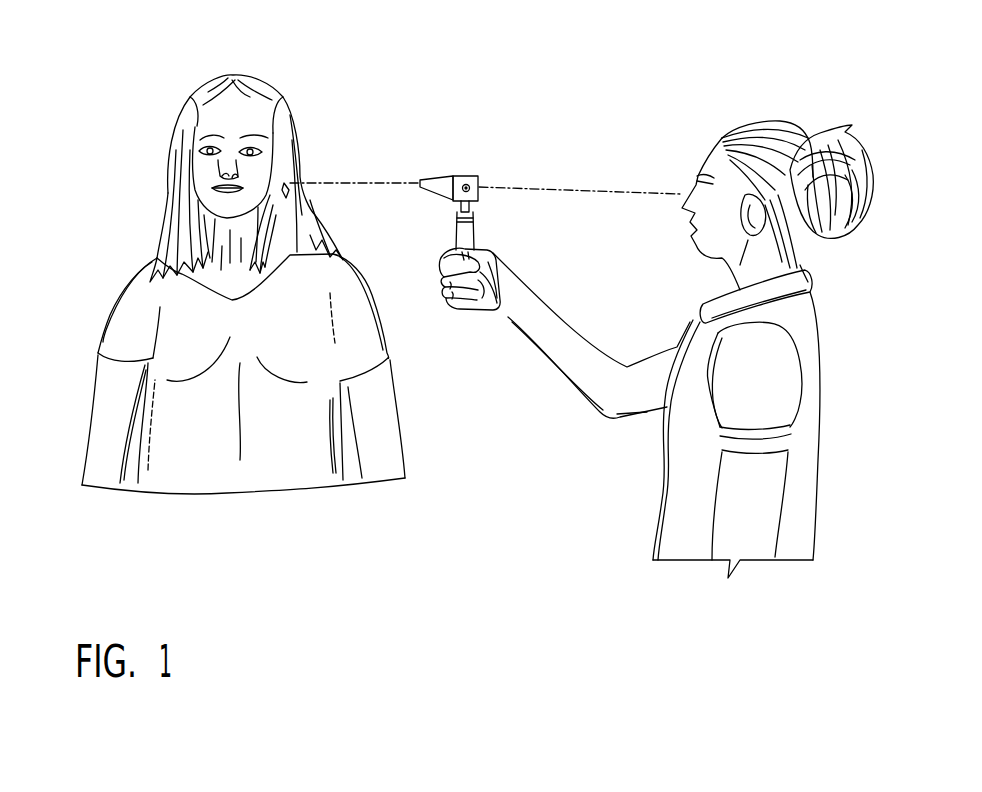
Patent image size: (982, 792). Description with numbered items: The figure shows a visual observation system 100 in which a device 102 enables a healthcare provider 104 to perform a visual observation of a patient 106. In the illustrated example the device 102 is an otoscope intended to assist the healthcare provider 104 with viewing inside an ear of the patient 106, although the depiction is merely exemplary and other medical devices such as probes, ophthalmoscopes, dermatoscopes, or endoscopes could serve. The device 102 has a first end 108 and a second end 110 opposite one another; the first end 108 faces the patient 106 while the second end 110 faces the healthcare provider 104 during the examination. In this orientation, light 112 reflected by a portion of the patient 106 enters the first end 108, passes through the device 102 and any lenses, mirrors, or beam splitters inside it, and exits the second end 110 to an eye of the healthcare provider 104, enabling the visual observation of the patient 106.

The visual observation system 100 is at (121, 80).
The device 102 is at (462, 176).
The healthcare provider 104 is at (813, 92).
The patient 106 is at (154, 511).
The first end 108 is at (425, 185).
The second end 110 is at (480, 190).
The light 112 is at (386, 171).